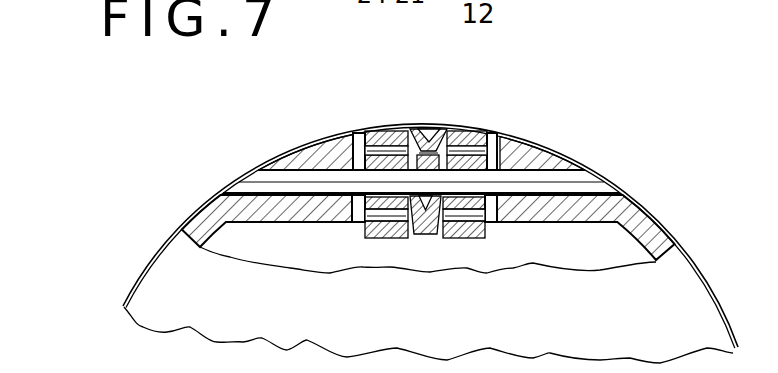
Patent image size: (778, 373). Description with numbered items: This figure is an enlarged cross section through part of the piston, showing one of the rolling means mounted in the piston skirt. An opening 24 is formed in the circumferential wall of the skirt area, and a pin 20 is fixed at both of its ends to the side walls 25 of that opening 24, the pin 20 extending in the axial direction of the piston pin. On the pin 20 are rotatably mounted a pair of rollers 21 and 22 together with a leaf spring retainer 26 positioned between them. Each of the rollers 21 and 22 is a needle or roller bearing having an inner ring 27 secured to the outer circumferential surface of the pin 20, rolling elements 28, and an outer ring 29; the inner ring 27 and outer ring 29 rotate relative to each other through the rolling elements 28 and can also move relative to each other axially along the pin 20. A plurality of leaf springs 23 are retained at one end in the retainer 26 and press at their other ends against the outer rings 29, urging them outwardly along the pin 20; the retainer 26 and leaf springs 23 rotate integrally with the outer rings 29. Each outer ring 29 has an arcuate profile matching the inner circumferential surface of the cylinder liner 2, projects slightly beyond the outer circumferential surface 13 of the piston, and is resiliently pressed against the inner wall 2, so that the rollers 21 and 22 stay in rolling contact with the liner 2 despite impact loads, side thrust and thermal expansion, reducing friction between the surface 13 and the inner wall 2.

The cylinder liner 2 is at (712, 290).
The outer circumferential surface 13 is at (515, 140).
The pin 20 is at (578, 185).
The roller 21 is at (383, 242).
The roller 22 is at (468, 243).
The leaf spring 23 is at (425, 143).
The opening 24 is at (357, 224).
The side wall 25 is at (335, 152).
The leaf spring retainer 26 is at (427, 218).
The inner ring 27 is at (353, 143).
The rolling elements 28 is at (366, 142).
The outer ring 29 is at (390, 133).